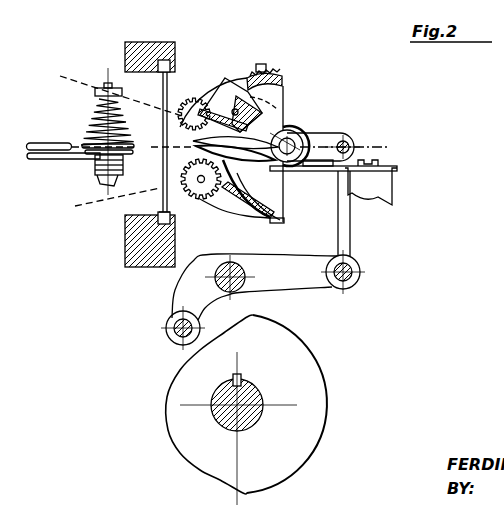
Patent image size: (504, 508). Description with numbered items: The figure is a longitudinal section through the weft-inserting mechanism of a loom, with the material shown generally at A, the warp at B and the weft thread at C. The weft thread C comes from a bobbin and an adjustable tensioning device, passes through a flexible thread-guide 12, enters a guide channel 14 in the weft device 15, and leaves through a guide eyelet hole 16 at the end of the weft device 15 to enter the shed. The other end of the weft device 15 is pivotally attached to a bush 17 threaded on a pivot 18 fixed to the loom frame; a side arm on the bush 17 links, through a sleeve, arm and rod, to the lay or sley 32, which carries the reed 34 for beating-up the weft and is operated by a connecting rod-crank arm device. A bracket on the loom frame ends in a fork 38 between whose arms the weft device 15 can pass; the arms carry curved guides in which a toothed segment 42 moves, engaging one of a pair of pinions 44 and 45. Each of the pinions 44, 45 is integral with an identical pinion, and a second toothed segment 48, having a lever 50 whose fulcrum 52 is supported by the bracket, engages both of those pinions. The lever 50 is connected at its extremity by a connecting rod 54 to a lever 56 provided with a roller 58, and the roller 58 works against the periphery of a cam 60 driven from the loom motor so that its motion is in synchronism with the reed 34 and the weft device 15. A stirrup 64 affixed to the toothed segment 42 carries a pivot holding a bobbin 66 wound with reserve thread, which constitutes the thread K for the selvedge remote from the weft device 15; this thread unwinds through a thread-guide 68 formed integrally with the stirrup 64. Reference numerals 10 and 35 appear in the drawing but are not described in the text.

The spring-loaded contact assembly 10 is at (88, 140).
The flexible thread-guide 12 is at (37, 161).
The guide channel 14 is at (163, 166).
The weft device 15 is at (322, 170).
The guide eyelet hole 16 is at (300, 133).
The bush 17 is at (385, 191).
The pivot 18 is at (378, 163).
The lay or sley 32 is at (152, 268).
The reed 34 is at (162, 190).
The frame plate 35 is at (284, 108).
The fork 38 is at (262, 185).
The toothed segment 42 is at (254, 80).
The pinion 44 is at (199, 200).
The pinion 45 is at (160, 44).
The toothed segment 48 is at (285, 128).
The lever 50 is at (352, 138).
The fulcrum 52 is at (348, 140).
The connecting rod 54 is at (345, 246).
The lever 56 is at (282, 275).
The roller 58 is at (165, 330).
The cam 60 is at (182, 380).
The stirrup 64 is at (196, 111).
The bobbin 66 is at (222, 107).
The thread-guide 68 is at (218, 100).
The material A is at (351, 147).
The warp B is at (118, 140).
The weft thread C is at (133, 142).
The thread K is at (272, 130).